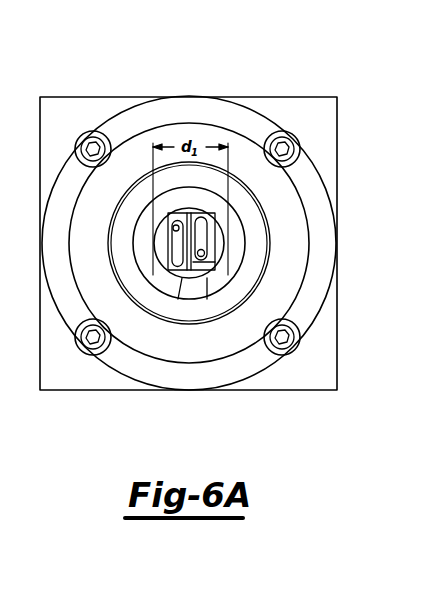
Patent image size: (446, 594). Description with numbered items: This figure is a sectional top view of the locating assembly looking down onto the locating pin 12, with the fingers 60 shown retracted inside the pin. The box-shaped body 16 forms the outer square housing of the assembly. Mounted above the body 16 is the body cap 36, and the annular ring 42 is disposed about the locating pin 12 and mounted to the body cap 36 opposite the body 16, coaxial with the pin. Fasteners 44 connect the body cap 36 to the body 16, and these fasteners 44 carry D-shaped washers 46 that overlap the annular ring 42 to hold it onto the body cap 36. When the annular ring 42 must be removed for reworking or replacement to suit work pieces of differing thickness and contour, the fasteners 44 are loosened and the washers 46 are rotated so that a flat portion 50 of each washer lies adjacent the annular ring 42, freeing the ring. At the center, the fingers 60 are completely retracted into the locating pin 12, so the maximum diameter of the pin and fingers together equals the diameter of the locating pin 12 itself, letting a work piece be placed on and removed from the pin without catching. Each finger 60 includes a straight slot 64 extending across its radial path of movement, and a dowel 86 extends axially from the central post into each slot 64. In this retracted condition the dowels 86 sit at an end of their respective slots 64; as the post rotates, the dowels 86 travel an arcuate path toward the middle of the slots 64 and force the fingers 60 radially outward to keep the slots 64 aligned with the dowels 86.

The locating pin 12 is at (202, 290).
The body 16 is at (100, 97).
The body cap 36 is at (190, 105).
The annular ring 42 is at (243, 228).
The fasteners 44 is at (92, 150).
The D-shaped washers 46 is at (78, 310).
The flat portion 50 is at (93, 355).
The fingers 60 is at (164, 243).
The slot 64 is at (179, 270).
The dowels 86 is at (173, 226).